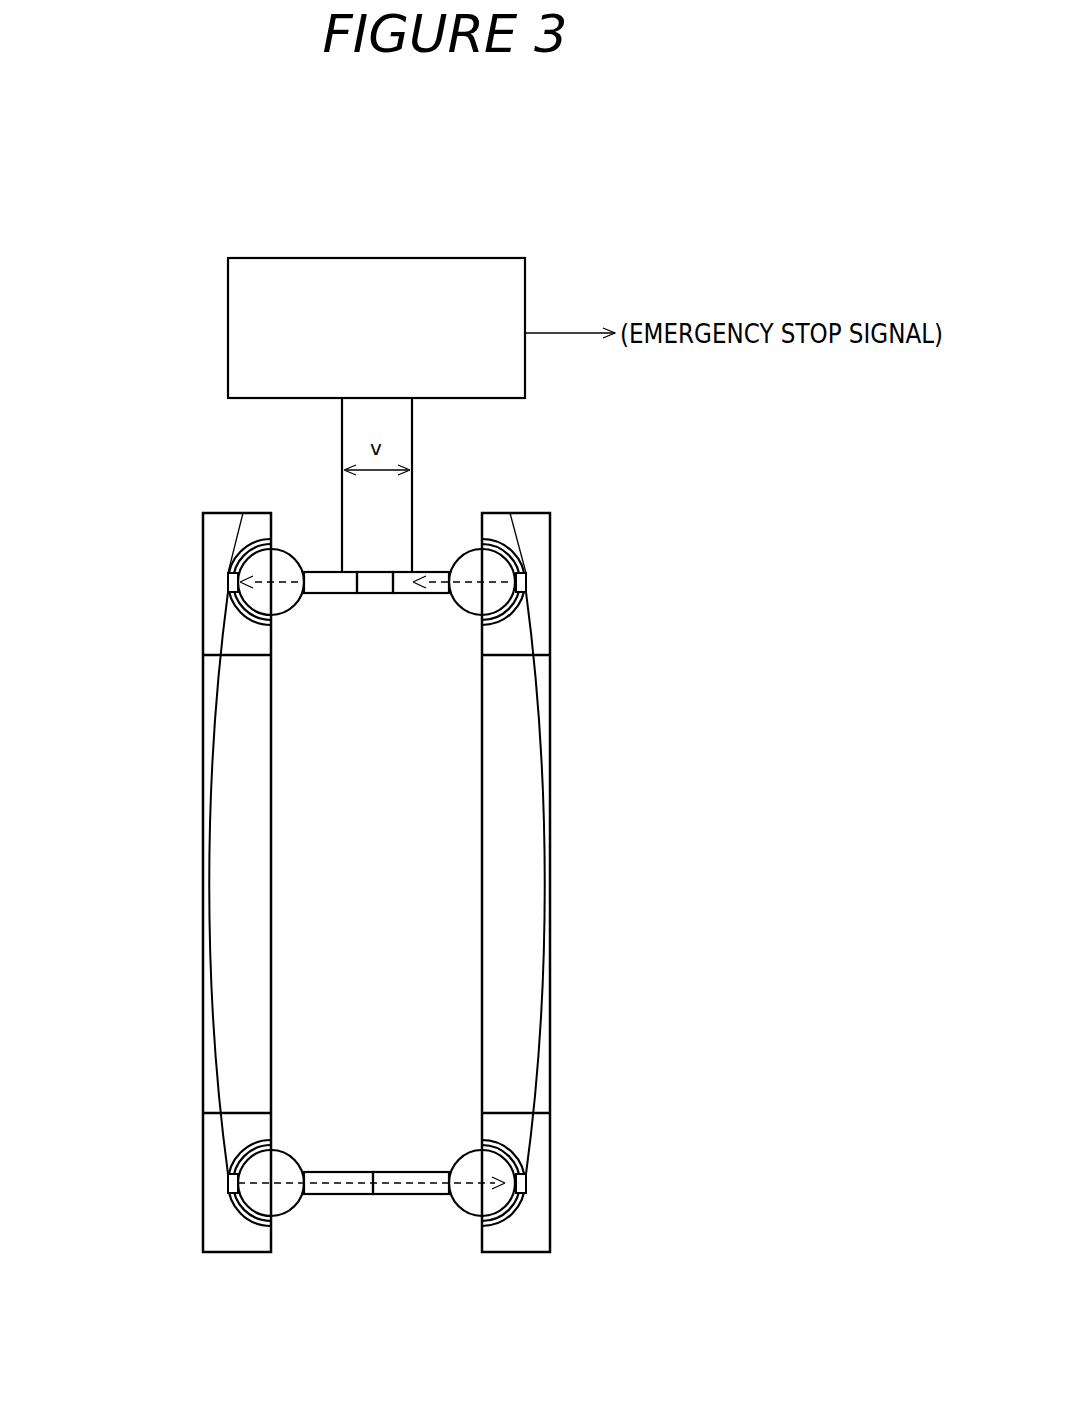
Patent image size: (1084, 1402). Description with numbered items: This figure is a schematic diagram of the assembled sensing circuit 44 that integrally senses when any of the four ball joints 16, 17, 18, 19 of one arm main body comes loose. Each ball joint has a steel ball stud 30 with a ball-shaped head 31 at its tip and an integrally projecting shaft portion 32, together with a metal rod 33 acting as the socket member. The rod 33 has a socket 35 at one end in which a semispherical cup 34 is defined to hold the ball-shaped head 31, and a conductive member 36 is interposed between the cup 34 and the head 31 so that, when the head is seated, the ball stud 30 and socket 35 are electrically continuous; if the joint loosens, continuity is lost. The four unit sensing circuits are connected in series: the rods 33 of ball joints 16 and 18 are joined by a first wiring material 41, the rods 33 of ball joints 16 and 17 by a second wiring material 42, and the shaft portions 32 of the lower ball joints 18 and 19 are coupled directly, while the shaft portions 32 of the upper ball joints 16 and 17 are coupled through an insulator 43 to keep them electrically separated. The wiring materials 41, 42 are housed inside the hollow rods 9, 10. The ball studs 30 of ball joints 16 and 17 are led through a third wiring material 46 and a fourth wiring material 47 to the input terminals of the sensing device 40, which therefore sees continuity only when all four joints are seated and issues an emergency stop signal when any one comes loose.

The rod 9 is at (201, 930).
The rod 10 is at (552, 930).
The ball joint 16 is at (190, 530).
The ball joint 17 is at (560, 530).
The ball joint 18 is at (190, 1235).
The ball joint 19 is at (560, 1235).
The ball stud 30 is at (323, 565).
The ball-shaped head 31 is at (285, 612).
The shaft portion 32 is at (330, 593).
The rod 33 is at (200, 625).
The cup 34 is at (247, 548).
The socket 35 is at (203, 583).
The conductive member 36 is at (235, 558).
The sensing device 40 is at (228, 330).
The first wiring material 41 is at (210, 860).
The second wiring material 42 is at (543, 860).
The insulator 43 is at (372, 572).
The assembled sensing circuit 44 is at (668, 521).
The third wiring material 46 is at (342, 450).
The fourth wiring material 47 is at (412, 455).